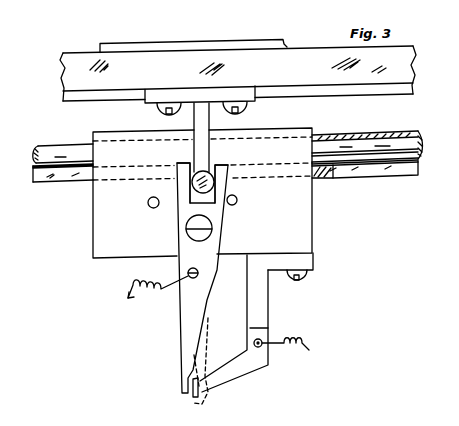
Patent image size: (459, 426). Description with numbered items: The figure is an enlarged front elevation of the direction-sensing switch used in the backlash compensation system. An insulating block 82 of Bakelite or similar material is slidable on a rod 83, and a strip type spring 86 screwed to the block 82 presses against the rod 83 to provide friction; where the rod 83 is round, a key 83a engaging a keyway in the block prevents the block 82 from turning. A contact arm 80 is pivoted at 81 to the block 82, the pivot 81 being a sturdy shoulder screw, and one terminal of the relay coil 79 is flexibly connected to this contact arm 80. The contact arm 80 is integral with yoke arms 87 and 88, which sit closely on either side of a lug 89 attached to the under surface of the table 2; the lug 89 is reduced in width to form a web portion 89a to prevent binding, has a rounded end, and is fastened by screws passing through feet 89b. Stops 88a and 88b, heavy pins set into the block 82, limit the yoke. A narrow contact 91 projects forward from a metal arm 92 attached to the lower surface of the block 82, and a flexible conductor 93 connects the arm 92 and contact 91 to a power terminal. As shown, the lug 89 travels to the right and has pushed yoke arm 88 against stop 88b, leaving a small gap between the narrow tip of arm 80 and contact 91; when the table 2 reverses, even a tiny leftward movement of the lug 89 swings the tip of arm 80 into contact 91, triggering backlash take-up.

The table 2 is at (298, 47).
The relay coil 79 is at (154, 296).
The contact arm 80 is at (178, 388).
The pivot 81 is at (186, 226).
The insulating block 82 is at (293, 235).
The rod 83 is at (370, 143).
The key 83a is at (400, 172).
The strip type spring 86 is at (322, 178).
The yoke arm 87 is at (177, 163).
The yoke arm 88 is at (228, 173).
The stop 88a is at (148, 205).
The stop 88b is at (236, 204).
The lug 89 is at (208, 171).
The web portion 89a is at (202, 125).
The feet 89b is at (148, 101).
The contact 91 is at (192, 399).
The metal arm 92 is at (271, 317).
The flexible conductor 93 is at (285, 351).